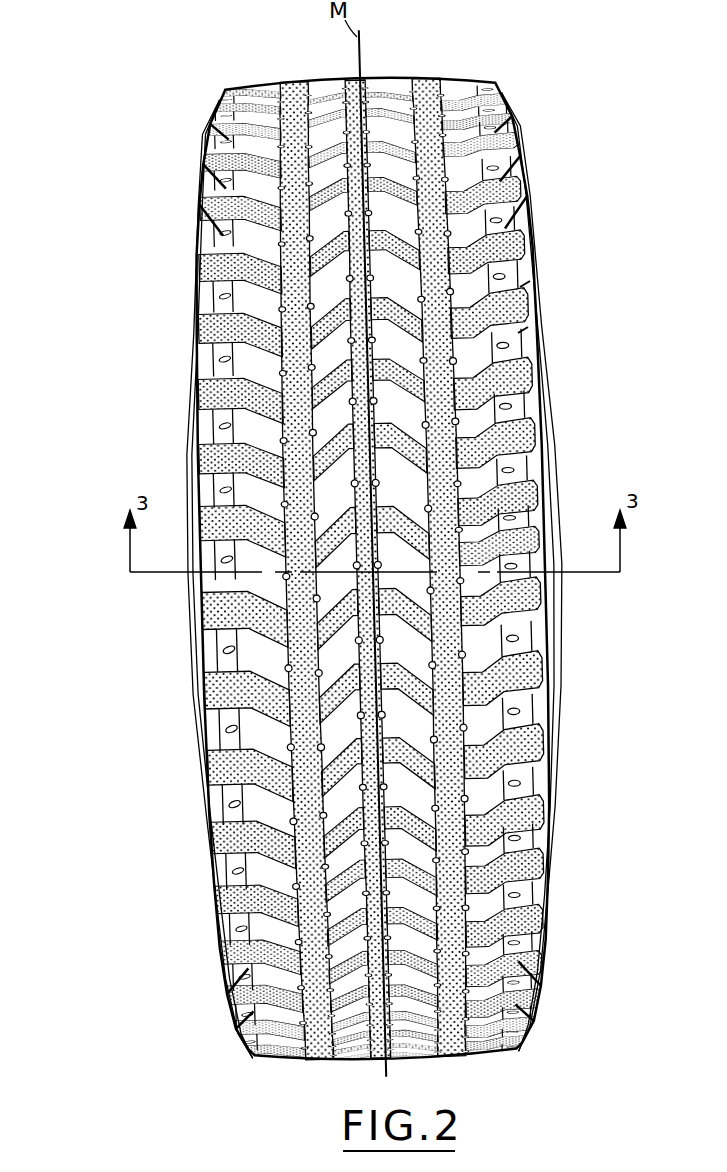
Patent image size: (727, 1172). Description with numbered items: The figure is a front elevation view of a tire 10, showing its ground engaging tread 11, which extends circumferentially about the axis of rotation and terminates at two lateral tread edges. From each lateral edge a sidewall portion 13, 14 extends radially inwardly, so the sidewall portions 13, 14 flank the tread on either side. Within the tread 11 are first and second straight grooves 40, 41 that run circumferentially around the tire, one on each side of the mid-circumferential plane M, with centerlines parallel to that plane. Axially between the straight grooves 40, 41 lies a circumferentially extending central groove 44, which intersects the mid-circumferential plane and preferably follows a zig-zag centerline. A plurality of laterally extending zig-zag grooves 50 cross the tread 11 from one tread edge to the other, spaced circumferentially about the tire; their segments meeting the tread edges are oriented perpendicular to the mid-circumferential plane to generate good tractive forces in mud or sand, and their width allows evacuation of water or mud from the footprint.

The tire 10 is at (350, 552).
The ground engaging tread 11 is at (507, 214).
The sidewall portion 13 is at (196, 618).
The sidewall portion 14 is at (552, 628).
The first straight groove 40 is at (291, 88).
The second straight groove 41 is at (419, 92).
The central groove 44 is at (354, 78).
The laterally extending zig-zag grooves 50 is at (528, 285).